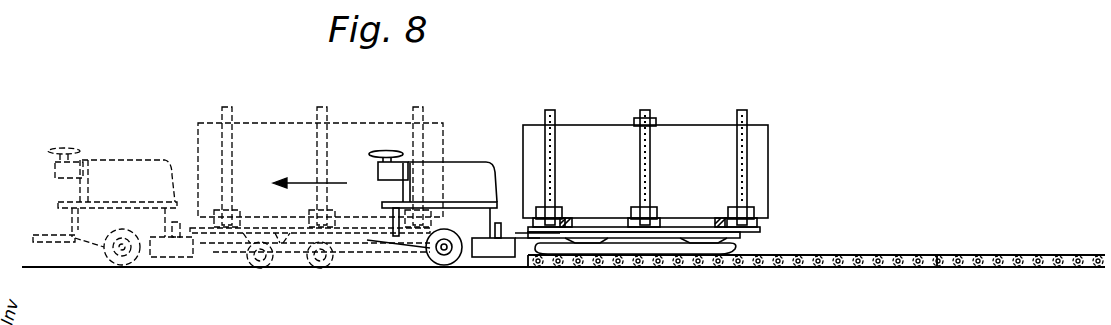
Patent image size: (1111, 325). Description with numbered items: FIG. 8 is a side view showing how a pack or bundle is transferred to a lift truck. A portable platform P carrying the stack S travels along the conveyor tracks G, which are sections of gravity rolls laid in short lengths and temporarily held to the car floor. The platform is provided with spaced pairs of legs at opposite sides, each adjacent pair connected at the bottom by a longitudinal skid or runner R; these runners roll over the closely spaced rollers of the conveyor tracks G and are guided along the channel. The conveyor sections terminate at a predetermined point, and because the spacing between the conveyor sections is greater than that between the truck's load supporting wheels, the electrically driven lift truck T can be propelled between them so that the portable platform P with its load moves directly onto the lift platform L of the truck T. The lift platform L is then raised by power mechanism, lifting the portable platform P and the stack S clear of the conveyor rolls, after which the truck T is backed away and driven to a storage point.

The lift truck T is at (463, 170).
The stack S is at (678, 140).
The portable platform P is at (675, 230).
The lift platform L is at (535, 238).
The skid or runner R is at (678, 250).
The conveyor tracks G is at (838, 258).